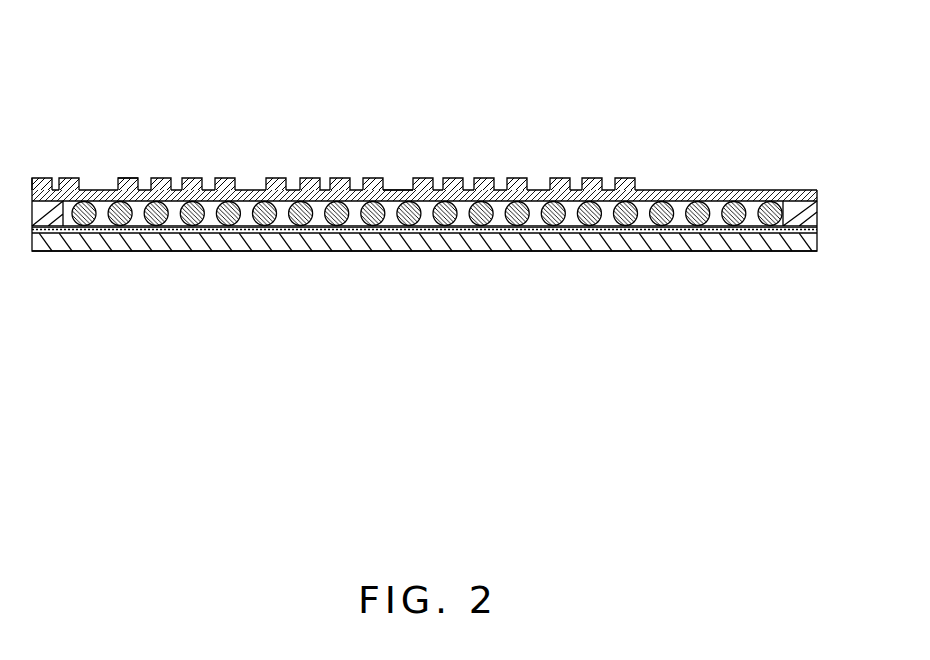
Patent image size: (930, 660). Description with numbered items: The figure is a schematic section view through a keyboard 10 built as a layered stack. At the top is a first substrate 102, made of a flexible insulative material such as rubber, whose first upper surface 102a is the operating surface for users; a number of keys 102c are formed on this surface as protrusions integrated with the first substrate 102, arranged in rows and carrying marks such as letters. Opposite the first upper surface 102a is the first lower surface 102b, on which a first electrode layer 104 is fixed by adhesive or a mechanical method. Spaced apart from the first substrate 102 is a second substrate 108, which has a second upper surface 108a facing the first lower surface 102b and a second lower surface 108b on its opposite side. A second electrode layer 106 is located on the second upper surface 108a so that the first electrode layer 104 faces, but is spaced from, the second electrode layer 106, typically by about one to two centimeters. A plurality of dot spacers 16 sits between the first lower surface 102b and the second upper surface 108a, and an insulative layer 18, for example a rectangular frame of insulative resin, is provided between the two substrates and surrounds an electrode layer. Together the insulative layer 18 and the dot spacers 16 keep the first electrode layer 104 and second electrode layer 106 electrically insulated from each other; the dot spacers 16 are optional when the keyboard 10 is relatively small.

The keyboard 10 is at (403, 61).
The first substrate 102 is at (150, 99).
The first upper surface 102a is at (178, 177).
The first lower surface 102b is at (200, 186).
The keys 102c is at (130, 177).
The dot spacers 16 is at (390, 190).
The first electrode layer 104 is at (693, 207).
The insulative layer 18 is at (797, 202).
The second electrode layer 106 is at (108, 232).
The second substrate 108 is at (507, 242).
The second upper surface 108a is at (259, 242).
The second lower surface 108b is at (685, 260).